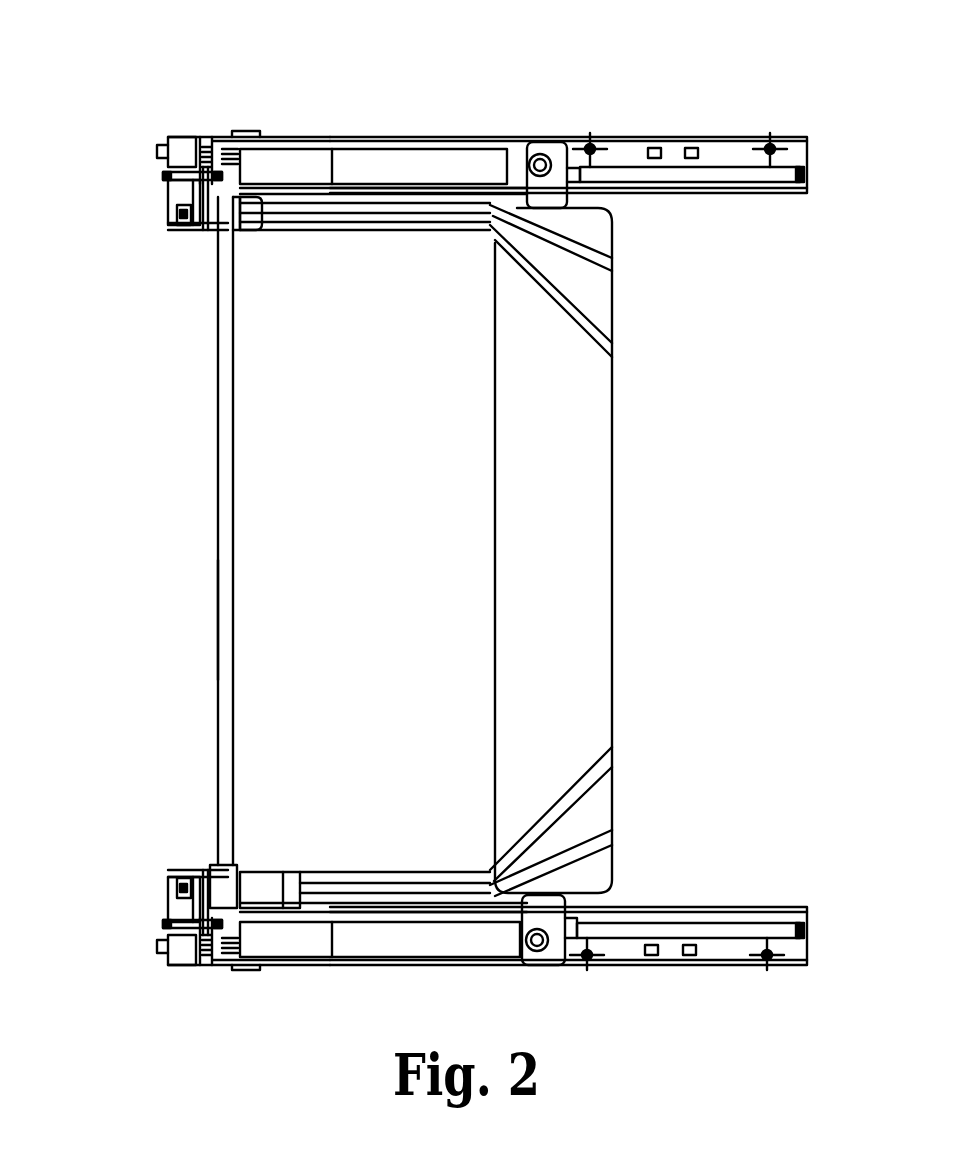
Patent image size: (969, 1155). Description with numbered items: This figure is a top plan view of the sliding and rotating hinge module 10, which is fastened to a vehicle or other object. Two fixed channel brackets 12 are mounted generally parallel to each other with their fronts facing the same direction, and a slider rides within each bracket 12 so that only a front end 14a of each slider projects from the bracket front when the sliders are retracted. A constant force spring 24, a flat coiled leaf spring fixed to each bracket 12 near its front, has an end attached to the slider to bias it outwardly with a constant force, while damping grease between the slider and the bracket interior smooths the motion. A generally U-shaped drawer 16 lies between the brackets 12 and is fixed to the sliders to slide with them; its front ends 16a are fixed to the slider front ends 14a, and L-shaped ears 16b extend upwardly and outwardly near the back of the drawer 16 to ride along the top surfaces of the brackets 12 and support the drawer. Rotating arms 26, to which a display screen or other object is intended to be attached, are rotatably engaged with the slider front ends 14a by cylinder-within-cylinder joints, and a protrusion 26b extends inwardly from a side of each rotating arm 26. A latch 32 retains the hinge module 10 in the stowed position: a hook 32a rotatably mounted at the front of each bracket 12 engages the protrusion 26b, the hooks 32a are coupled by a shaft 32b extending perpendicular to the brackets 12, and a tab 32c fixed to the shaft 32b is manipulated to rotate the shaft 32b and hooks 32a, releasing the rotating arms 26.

The hinge module 10 is at (822, 76).
The fixed channel bracket 12 is at (726, 150).
The front end of slider 14a is at (175, 198).
The drawer 16 is at (595, 530).
The front end of drawer 16a is at (236, 232).
The L-shaped ear 16b is at (555, 150).
The constant force spring 24 is at (276, 160).
The rotating arm 26 is at (183, 145).
The protrusion 26b is at (172, 226).
The latch 32 is at (218, 482).
The hook 32a is at (165, 178).
The shaft 32b is at (220, 616).
The tab 32c is at (270, 887).